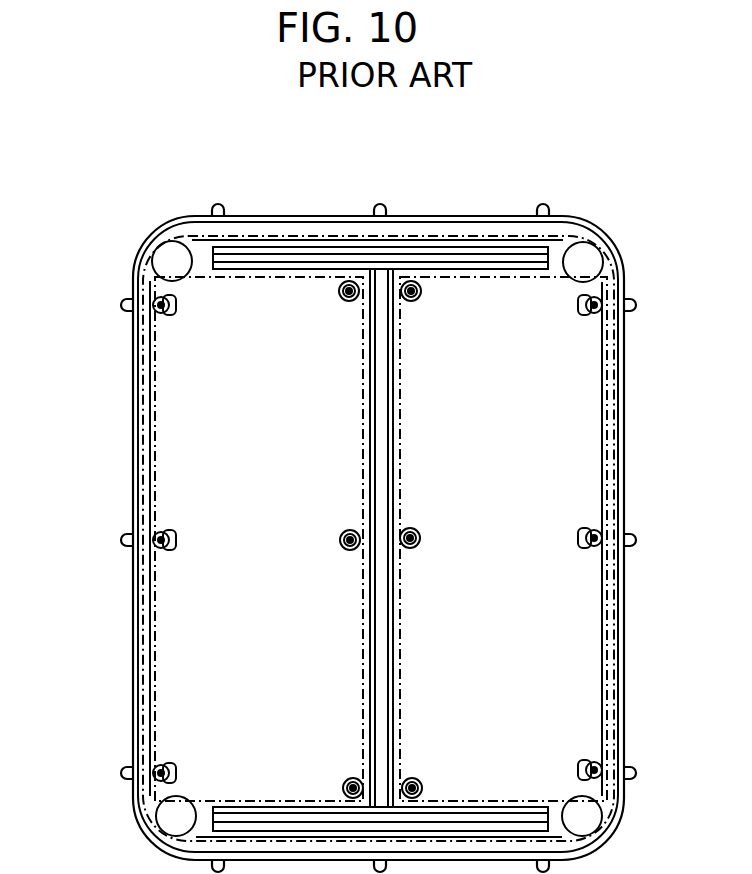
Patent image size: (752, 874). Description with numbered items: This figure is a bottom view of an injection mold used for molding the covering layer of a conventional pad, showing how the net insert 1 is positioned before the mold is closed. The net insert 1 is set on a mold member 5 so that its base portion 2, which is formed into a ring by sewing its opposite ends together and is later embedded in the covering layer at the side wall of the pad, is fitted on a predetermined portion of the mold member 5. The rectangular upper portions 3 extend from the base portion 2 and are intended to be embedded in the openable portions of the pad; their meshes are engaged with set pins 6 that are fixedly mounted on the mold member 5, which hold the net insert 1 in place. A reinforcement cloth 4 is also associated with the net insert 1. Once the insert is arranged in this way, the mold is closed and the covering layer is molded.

The net insert 1 is at (626, 390).
The base portion 2 is at (140, 447).
The upper portions 3 is at (170, 610).
The reinforcement cloth 4 is at (155, 375).
The mold member 5 is at (177, 660).
The set pins 6 is at (340, 300).